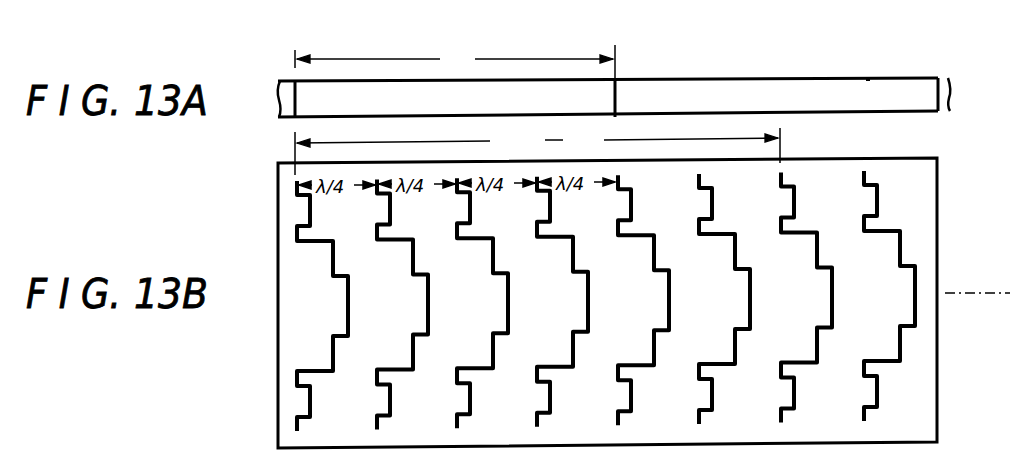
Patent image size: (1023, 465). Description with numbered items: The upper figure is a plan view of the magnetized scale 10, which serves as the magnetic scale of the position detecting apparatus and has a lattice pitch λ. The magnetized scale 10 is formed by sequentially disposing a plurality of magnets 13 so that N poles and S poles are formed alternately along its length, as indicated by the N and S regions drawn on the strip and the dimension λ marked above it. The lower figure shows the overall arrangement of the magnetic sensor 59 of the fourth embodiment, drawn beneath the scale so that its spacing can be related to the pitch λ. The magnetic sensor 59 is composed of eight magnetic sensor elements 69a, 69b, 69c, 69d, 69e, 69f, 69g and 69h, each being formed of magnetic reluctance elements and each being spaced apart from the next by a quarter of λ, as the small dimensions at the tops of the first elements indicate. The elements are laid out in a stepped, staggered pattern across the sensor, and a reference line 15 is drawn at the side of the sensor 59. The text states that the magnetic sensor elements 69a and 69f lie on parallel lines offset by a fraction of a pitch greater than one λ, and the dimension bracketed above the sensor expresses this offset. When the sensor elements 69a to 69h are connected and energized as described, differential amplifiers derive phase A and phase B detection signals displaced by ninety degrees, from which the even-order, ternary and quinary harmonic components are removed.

In FIG. 13A, the magnetized scale 10 is at (631, 76).
In FIG. 13A, the magnet 13 is at (868, 80).
In FIG. 13B, the center line 15 is at (957, 293).
In FIG. 13B, the magnetic sensor 59 is at (938, 371).
In FIG. 13B, the magnetic sensor element 69a is at (351, 289).
In FIG. 13B, the magnetic sensor element 69b is at (431, 288).
In FIG. 13B, the magnetic sensor element 69c is at (511, 287).
In FIG. 13B, the magnetic sensor element 69d is at (591, 286).
In FIG. 13B, the magnetic sensor element 69e is at (672, 286).
In FIG. 13B, the magnetic sensor element 69f is at (753, 285).
In FIG. 13B, the magnetic sensor element 69g is at (835, 284).
In FIG. 13B, the magnetic sensor element 69h is at (918, 337).